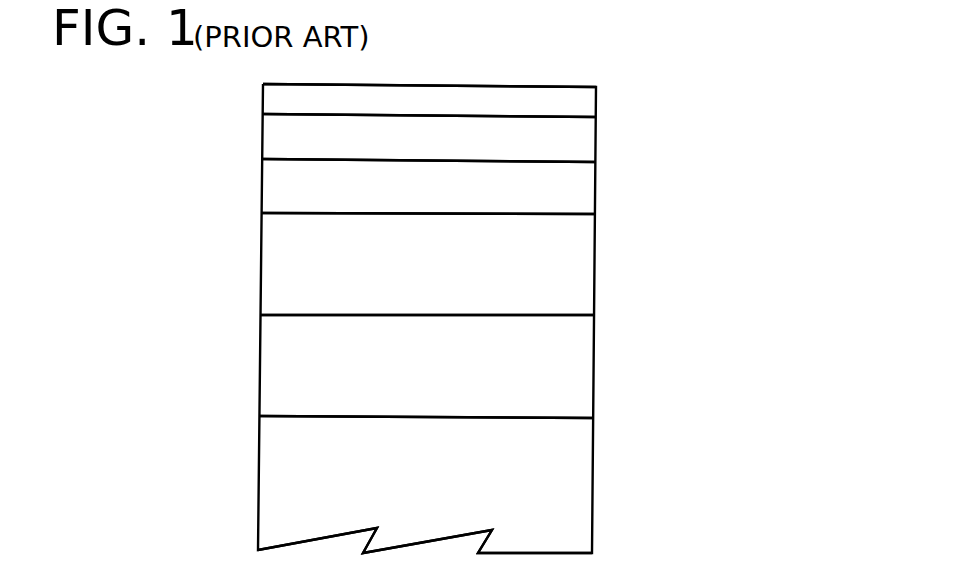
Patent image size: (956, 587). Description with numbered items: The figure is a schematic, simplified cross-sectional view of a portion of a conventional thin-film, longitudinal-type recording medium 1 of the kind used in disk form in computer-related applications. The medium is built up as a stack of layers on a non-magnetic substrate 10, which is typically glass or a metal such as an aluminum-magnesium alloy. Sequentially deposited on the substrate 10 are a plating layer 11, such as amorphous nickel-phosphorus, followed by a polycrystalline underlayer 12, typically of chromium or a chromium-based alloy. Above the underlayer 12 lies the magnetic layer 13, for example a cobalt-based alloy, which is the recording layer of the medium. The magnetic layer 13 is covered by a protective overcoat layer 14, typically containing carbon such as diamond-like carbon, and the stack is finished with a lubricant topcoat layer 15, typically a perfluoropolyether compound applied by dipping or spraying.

The thin-film longitudinal-type recording medium 1 is at (728, 138).
The non-magnetic substrate 10 is at (592, 493).
The plating layer 11 is at (593, 373).
The polycrystalline underlayer 12 is at (594, 272).
The magnetic layer 13 is at (594, 187).
The protective overcoat layer 14 is at (595, 140).
The lubricant topcoat layer 15 is at (596, 98).